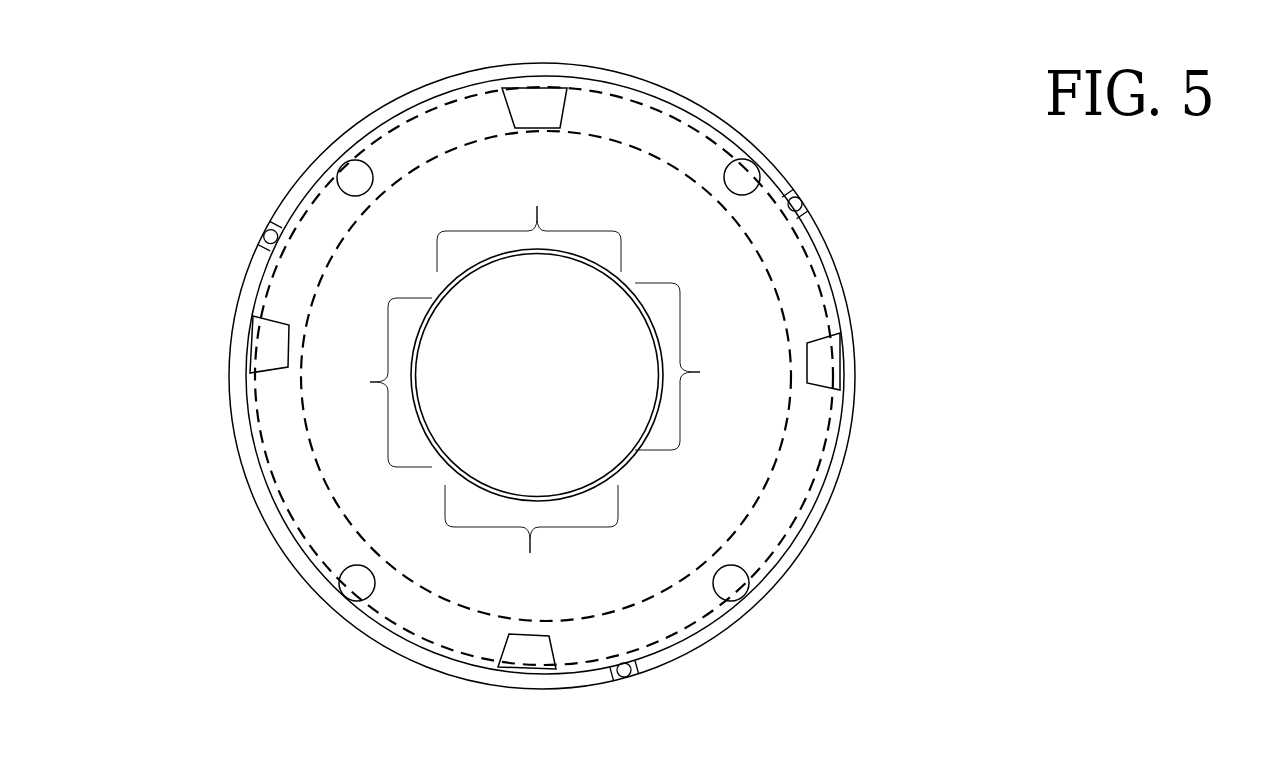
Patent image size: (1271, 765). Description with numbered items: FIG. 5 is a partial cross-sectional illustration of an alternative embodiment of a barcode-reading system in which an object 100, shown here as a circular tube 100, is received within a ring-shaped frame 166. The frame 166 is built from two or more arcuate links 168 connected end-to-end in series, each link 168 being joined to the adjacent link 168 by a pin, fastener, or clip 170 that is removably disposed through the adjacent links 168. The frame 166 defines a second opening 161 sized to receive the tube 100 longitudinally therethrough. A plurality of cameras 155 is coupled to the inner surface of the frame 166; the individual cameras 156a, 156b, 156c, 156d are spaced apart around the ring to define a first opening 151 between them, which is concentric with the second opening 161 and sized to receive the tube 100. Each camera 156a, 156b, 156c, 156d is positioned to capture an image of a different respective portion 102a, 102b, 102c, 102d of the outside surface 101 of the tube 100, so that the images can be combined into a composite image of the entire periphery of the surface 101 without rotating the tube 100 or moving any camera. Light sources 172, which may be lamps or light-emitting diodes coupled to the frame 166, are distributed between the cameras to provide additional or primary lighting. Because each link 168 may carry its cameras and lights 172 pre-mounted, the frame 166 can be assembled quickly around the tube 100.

The object 100 is at (554, 383).
The outside surface 101 is at (432, 297).
The first respective portion of the surface 102a is at (529, 214).
The second respective portion of the surface 102b is at (703, 372).
The third respective portion of the surface 102c is at (531, 542).
The fourth respective portion of the surface 102d is at (370, 382).
The first opening 151 is at (440, 150).
The plurality of cameras 155 is at (224, 354).
The first camera 156a is at (555, 108).
The second camera 156b is at (833, 366).
The third camera 156c is at (530, 643).
The fourth camera 156d is at (258, 341).
The second opening 161 is at (447, 100).
The frame 166 is at (848, 440).
The link 168 is at (260, 483).
The pin, fastener, or clip 170 is at (626, 677).
The light source 172 is at (350, 172).